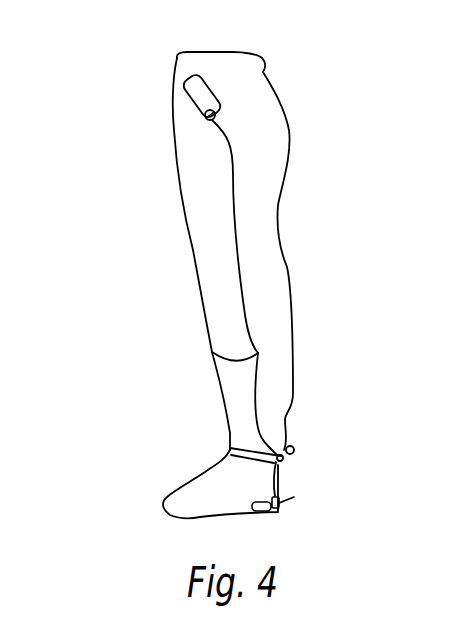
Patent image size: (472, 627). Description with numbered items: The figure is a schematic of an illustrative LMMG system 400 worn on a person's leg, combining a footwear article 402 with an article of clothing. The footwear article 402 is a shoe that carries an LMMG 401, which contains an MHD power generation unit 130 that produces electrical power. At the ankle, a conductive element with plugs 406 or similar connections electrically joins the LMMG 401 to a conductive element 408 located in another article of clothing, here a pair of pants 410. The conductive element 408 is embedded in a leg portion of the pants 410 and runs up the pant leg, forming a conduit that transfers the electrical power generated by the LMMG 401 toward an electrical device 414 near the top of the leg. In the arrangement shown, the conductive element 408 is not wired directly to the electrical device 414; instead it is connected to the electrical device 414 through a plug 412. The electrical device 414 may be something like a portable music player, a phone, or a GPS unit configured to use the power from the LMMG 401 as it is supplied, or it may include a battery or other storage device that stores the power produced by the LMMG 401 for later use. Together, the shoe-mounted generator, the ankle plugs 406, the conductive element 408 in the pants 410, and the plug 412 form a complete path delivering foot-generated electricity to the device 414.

The LMMG system 400 is at (129, 224).
The pair of pants 410 is at (273, 277).
The conductive element 408 is at (212, 352).
The electrical device 414 is at (198, 76).
The plug 412 is at (215, 117).
The footwear article 402 is at (216, 468).
The plugs 406 is at (291, 462).
The LMMG 401 is at (297, 484).
The MHD power generation unit 130 is at (267, 516).